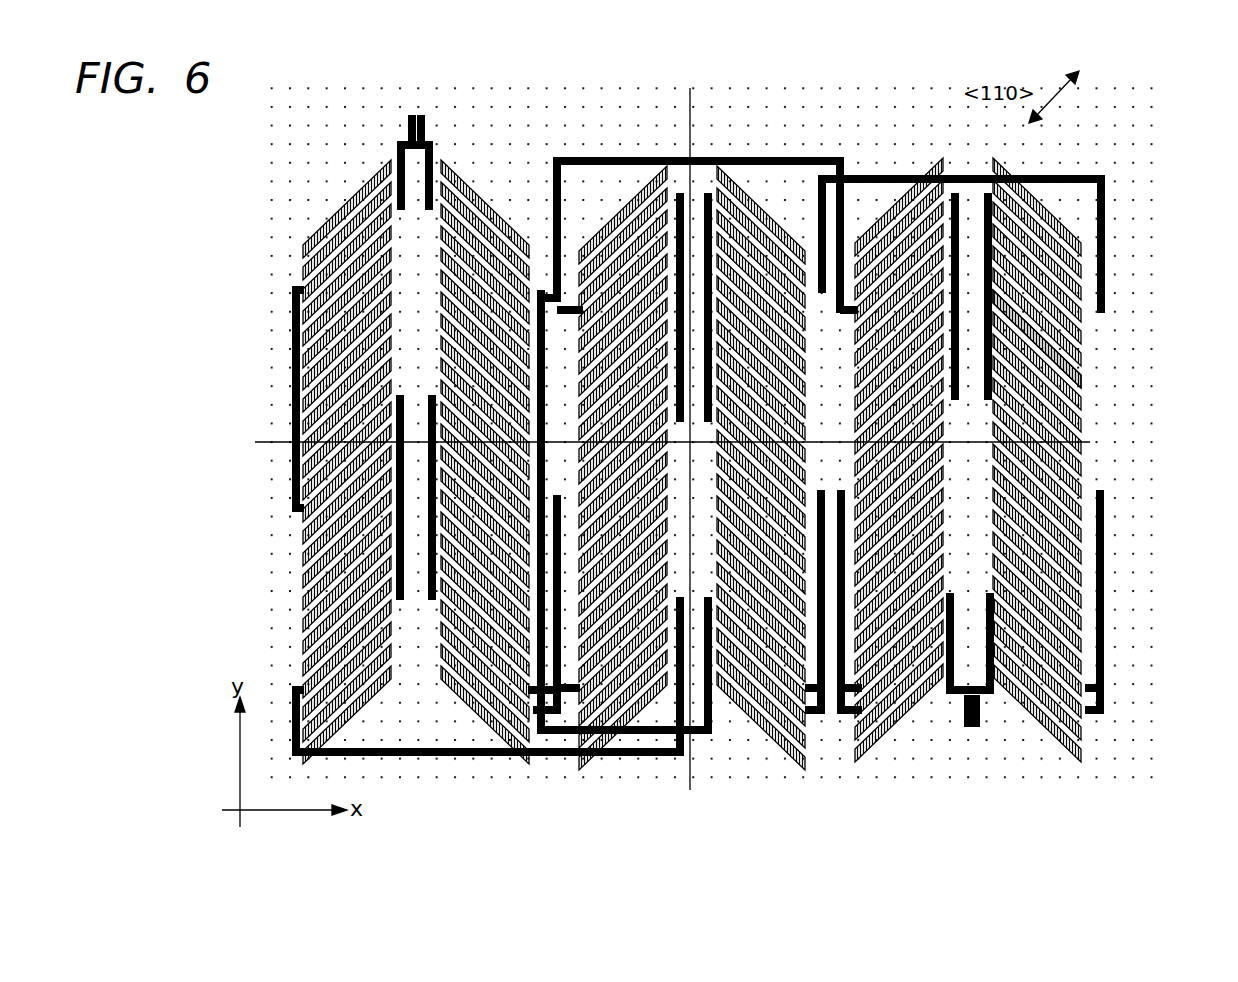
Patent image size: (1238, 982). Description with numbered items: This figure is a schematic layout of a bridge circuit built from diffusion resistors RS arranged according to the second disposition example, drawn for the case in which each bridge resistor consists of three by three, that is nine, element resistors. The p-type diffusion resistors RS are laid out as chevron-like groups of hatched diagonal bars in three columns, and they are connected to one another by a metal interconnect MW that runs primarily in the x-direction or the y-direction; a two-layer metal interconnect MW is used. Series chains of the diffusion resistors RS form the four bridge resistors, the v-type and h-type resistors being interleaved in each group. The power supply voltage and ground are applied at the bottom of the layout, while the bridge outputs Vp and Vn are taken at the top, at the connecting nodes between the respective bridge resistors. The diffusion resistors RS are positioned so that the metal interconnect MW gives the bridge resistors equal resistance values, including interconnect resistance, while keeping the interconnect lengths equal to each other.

The metal interconnect MW is at (1107, 265).
The diffusion resistor RS is at (1085, 352).
The output Vp is at (397, 114).
The output Vn is at (436, 114).